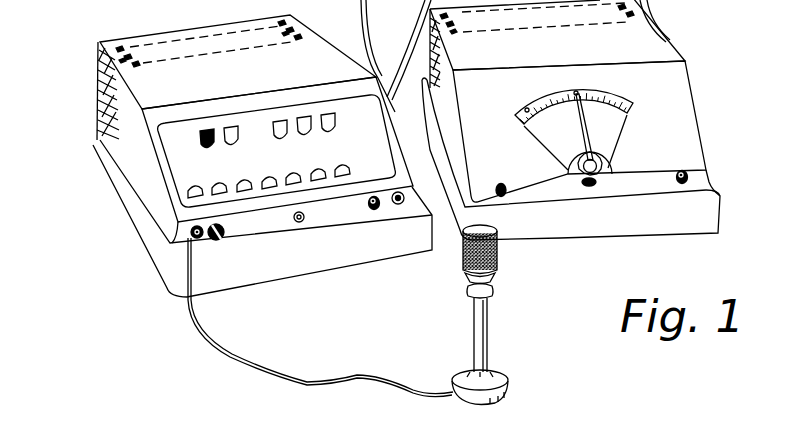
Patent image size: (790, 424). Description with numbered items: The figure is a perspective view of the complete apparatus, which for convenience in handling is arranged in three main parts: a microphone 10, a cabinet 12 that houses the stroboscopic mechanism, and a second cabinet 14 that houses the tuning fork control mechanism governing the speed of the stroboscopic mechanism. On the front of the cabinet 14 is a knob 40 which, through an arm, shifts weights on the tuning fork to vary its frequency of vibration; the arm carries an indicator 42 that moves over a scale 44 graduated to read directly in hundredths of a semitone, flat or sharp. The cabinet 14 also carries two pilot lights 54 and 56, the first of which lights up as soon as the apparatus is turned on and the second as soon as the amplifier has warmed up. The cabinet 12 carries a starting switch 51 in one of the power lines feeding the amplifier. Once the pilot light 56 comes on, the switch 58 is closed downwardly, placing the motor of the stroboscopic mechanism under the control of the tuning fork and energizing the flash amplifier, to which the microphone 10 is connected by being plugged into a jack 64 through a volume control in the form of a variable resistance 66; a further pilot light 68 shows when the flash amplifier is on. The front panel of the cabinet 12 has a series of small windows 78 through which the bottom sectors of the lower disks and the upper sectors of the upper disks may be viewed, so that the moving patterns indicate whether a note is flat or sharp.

The microphone 10 is at (499, 262).
The cabinet 12 is at (143, 171).
The cabinet 14 is at (681, 107).
The knob 40 is at (598, 180).
The indicator 42 is at (585, 129).
The scale 44 is at (545, 104).
The starting switch 51 is at (404, 195).
The pilot light 54 is at (690, 176).
The pilot light 56 is at (501, 197).
The switch 58 is at (381, 210).
The jack 64 is at (176, 250).
The variable resistance 66 is at (226, 229).
The pilot light 68 is at (299, 222).
The small windows 78 is at (336, 124).